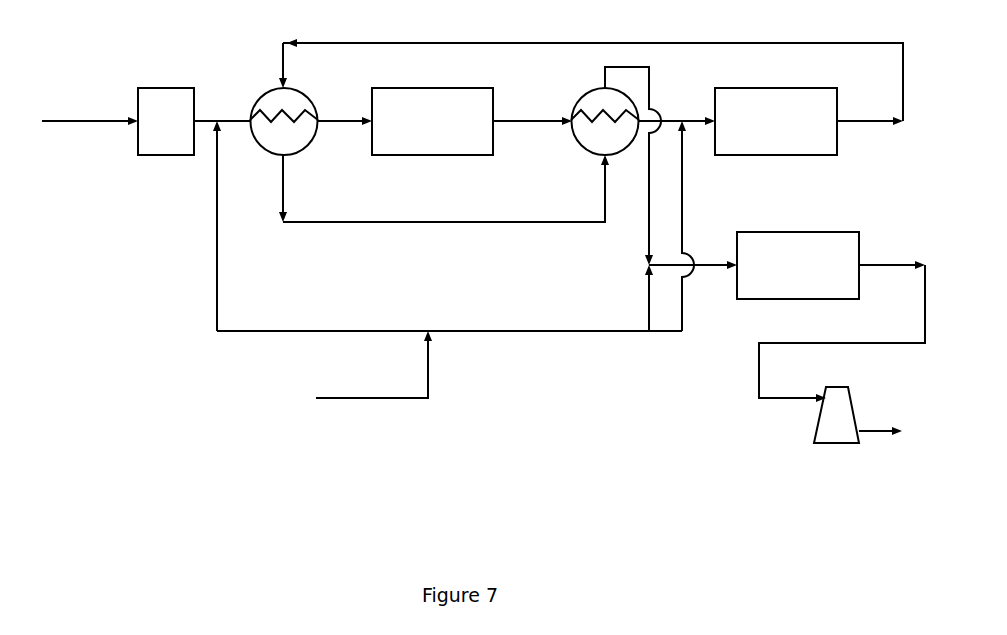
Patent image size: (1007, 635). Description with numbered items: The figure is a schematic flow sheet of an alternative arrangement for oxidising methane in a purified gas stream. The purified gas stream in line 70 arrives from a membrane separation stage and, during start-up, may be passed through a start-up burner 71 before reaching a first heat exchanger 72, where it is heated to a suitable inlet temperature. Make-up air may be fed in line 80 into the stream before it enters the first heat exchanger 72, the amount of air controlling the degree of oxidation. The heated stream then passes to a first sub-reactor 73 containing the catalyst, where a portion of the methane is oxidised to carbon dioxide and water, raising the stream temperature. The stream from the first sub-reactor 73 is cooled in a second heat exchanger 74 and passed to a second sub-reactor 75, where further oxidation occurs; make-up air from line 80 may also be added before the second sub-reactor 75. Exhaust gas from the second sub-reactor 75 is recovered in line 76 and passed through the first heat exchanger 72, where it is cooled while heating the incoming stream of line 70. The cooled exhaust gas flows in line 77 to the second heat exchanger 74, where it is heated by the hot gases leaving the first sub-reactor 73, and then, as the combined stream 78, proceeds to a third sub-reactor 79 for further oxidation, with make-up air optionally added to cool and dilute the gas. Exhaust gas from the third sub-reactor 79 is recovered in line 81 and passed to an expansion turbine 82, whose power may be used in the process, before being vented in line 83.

The line 70 is at (83, 117).
The start-up burner 71 is at (187, 83).
The first heat exchanger 72 is at (263, 92).
The first sub-reactor 73 is at (420, 88).
The second heat exchanger 74 is at (578, 95).
The second sub-reactor 75 is at (799, 85).
The line 76 is at (605, 39).
The line 77 is at (383, 217).
The combined stream 78 is at (643, 246).
The third sub-reactor 79 is at (827, 232).
The line 80 is at (353, 392).
The line 81 is at (850, 339).
The expansion turbine 82 is at (837, 383).
The line 83 is at (899, 417).